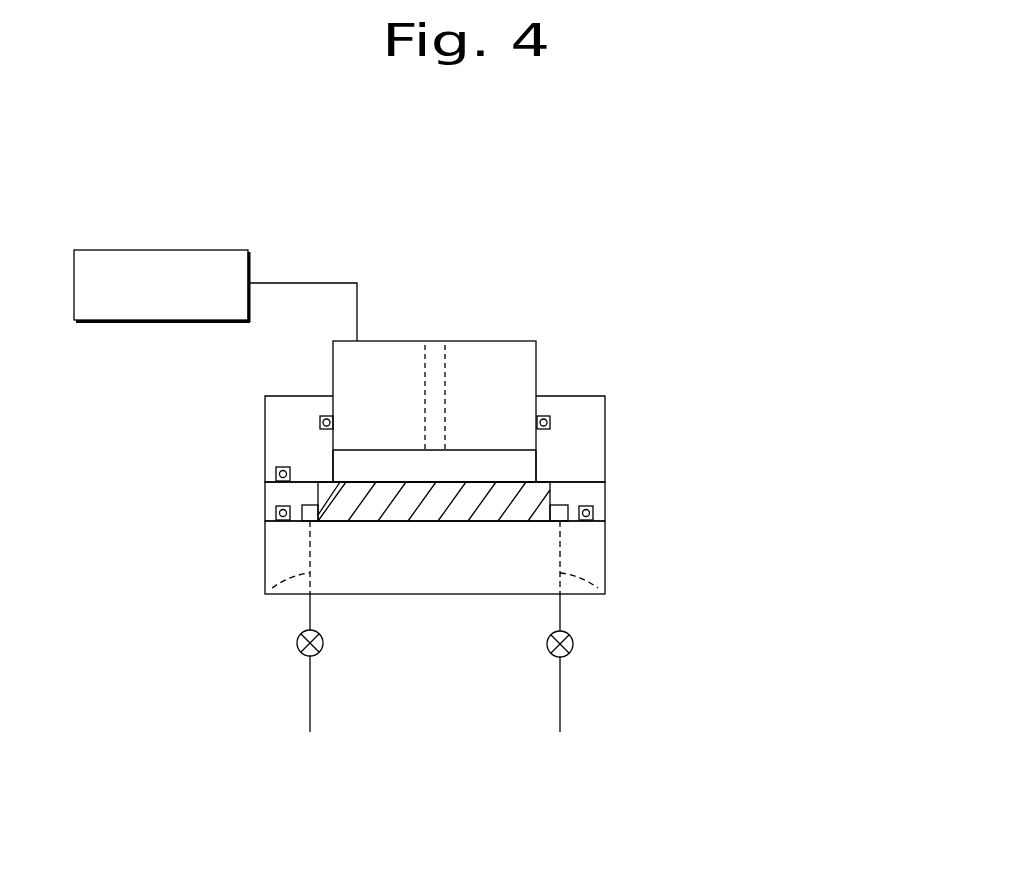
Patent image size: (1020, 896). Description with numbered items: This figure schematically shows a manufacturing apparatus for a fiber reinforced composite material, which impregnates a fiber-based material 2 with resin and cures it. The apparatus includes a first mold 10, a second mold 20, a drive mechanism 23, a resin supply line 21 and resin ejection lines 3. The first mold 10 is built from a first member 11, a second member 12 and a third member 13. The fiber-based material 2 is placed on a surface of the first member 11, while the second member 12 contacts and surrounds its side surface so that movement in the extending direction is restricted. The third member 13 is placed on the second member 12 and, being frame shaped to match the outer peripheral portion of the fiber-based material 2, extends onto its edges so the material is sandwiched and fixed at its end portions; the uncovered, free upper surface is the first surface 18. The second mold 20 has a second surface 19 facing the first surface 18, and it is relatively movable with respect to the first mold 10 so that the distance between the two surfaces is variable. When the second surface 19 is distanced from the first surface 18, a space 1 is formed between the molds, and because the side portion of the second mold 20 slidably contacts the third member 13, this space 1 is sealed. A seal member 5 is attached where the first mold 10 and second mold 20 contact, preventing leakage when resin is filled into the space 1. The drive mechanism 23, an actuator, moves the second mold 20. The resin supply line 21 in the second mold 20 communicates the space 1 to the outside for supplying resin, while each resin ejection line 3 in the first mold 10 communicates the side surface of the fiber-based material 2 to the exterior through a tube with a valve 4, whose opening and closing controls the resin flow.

The space 1 is at (398, 462).
The fiber-based material 2 is at (457, 508).
The resin ejection line 3 is at (268, 595).
The valve 4 is at (296, 646).
The seal member 5 is at (320, 418).
The first mold 10 is at (566, 495).
The first member 11 is at (467, 557).
The second member 12 is at (595, 500).
The third member 13 is at (595, 463).
The first surface 18 is at (505, 482).
The second surface 19 is at (378, 452).
The second mold 20 is at (525, 357).
The resin supply line 21 is at (447, 362).
The drive mechanism 23 is at (165, 249).